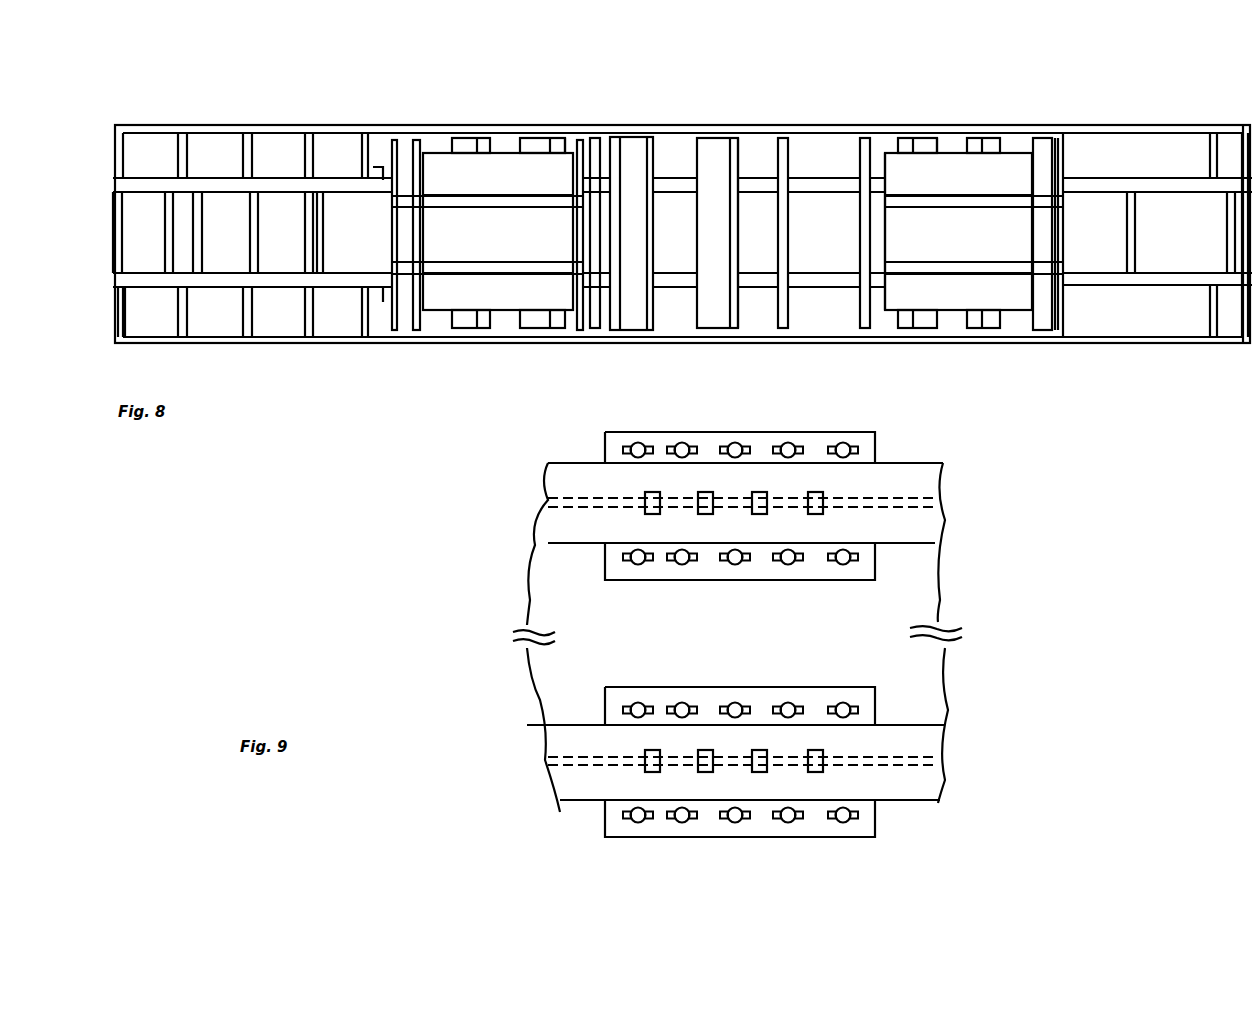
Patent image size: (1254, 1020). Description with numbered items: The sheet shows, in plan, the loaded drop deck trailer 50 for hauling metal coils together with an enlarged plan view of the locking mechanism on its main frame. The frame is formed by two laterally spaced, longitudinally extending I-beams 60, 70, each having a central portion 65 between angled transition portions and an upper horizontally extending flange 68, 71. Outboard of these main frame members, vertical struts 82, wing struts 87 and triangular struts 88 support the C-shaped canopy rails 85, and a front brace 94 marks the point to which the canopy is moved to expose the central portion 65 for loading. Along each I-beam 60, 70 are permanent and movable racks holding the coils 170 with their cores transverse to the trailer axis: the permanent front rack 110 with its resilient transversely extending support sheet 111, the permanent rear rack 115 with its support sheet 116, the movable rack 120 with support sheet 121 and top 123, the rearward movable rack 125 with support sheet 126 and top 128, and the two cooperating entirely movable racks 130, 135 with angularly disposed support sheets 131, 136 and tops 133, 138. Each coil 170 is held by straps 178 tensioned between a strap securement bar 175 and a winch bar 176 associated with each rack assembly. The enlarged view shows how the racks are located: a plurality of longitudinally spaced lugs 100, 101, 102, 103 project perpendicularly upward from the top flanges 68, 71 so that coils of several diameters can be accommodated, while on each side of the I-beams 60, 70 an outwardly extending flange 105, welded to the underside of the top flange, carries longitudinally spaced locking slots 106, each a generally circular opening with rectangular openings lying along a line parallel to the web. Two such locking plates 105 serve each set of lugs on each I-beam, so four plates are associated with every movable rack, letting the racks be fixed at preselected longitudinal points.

In FIG. 8, the trailer 50 is at (1167, 44).
In FIG. 8, the I-beam 60 is at (330, 285).
In FIG. 9, the I-beam 60 is at (900, 724).
In FIG. 9, the central portion 65 is at (915, 757).
In FIG. 9, the upper horizontally extending flange 68 is at (925, 800).
In FIG. 8, the I-beam 70 is at (215, 185).
In FIG. 9, the I-beam 70 is at (923, 463).
In FIG. 9, the upper flange 71 is at (922, 484).
In FIG. 8, the strut 82 is at (275, 140).
In FIG. 8, the canopy rail 85 is at (343, 128).
In FIG. 8, the wing strut 87 is at (118, 312).
In FIG. 8, the triangular strut 88 is at (1230, 150).
In FIG. 8, the front brace 94 is at (113, 220).
In FIG. 9, the lug 100 is at (648, 515).
In FIG. 9, the lug 101 is at (705, 515).
In FIG. 9, the lug 102 is at (760, 515).
In FIG. 9, the lug 103 is at (820, 514).
In FIG. 9, the flange 105 is at (835, 430).
In FIG. 9, the locking slot 106 is at (636, 447).
In FIG. 8, the front rack 110 is at (450, 140).
In FIG. 8, the support sheet 111 is at (460, 152).
In FIG. 8, the rear rack 115 is at (1015, 138).
In FIG. 8, the support sheet 116 is at (1000, 150).
In FIG. 8, the movable rack 120 is at (535, 138).
In FIG. 8, the support sheet 121 is at (535, 323).
In FIG. 8, the top 123 is at (550, 140).
In FIG. 8, the movable rack 125 is at (920, 138).
In FIG. 8, the support sheet 126 is at (935, 140).
In FIG. 8, the top 128 is at (880, 140).
In FIG. 8, the movable rack 130 is at (628, 140).
In FIG. 8, the support sheet 131 is at (645, 150).
In FIG. 8, the top sheet 133 is at (620, 330).
In FIG. 8, the movable rack 135 is at (745, 150).
In FIG. 8, the support sheet 136 is at (720, 322).
In FIG. 8, the top 138 is at (745, 325).
In FIG. 8, the coil 170 is at (512, 238).
In FIG. 8, the strap securement bar 175 is at (415, 330).
In FIG. 8, the winch bar 176 is at (597, 330).
In FIG. 8, the strap 178 is at (493, 195).